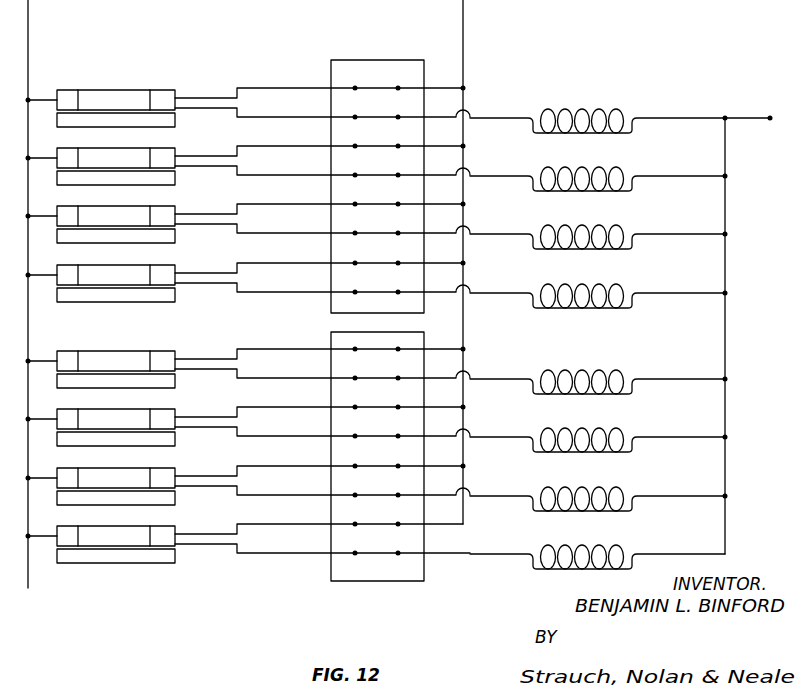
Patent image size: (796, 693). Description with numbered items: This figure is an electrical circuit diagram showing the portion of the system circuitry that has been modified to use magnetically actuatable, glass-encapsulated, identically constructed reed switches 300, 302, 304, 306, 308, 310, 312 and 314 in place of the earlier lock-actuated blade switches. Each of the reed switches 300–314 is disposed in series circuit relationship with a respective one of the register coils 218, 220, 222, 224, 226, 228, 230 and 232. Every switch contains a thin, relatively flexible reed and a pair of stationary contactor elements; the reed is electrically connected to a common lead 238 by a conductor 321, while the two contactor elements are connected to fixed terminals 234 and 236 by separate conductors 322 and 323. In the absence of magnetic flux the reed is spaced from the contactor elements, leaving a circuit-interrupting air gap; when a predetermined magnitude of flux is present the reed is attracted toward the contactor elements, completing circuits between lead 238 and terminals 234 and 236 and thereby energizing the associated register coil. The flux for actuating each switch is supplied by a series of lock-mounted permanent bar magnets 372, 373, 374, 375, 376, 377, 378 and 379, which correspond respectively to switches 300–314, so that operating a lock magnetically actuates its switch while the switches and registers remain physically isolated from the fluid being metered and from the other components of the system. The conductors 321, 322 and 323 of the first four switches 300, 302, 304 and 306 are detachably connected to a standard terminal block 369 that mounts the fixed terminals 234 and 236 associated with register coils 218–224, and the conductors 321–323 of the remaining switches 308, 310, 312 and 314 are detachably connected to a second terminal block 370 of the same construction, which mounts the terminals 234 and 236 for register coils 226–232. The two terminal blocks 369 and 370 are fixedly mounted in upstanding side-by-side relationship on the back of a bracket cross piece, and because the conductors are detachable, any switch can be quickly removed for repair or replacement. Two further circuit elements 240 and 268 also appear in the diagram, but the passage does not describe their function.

The lead 238 is at (29, 52).
The supply conductor 240 is at (463, 30).
The output terminal 268 is at (770, 118).
The register coil 218 is at (605, 111).
The register coil 220 is at (605, 169).
The register coil 222 is at (605, 227).
The register coil 224 is at (605, 286).
The register coil 226 is at (605, 372).
The register coil 228 is at (605, 430).
The register coil 230 is at (605, 489).
The register coil 232 is at (605, 547).
The terminal 234 is at (398, 88).
The terminal 236 is at (398, 117).
The reed switch 300 is at (129, 81).
The reed switch 302 is at (147, 147).
The reed switch 304 is at (150, 209).
The reed switch 306 is at (150, 267).
The reed switch 308 is at (144, 351).
The reed switch 310 is at (150, 410).
The reed switch 312 is at (150, 469).
The reed switch 314 is at (150, 524).
The conductor 321 is at (38, 100).
The conductor 322 is at (252, 88).
The conductor 323 is at (254, 116).
The terminal block 369 is at (350, 66).
The terminal block 370 is at (358, 572).
The permanent bar magnet 372 is at (133, 124).
The permanent bar magnet 373 is at (140, 181).
The permanent bar magnet 374 is at (143, 239).
The permanent bar magnet 375 is at (145, 296).
The permanent bar magnet 376 is at (152, 382).
The permanent bar magnet 377 is at (140, 440).
The permanent bar magnet 378 is at (143, 500).
The permanent bar magnet 379 is at (122, 563).